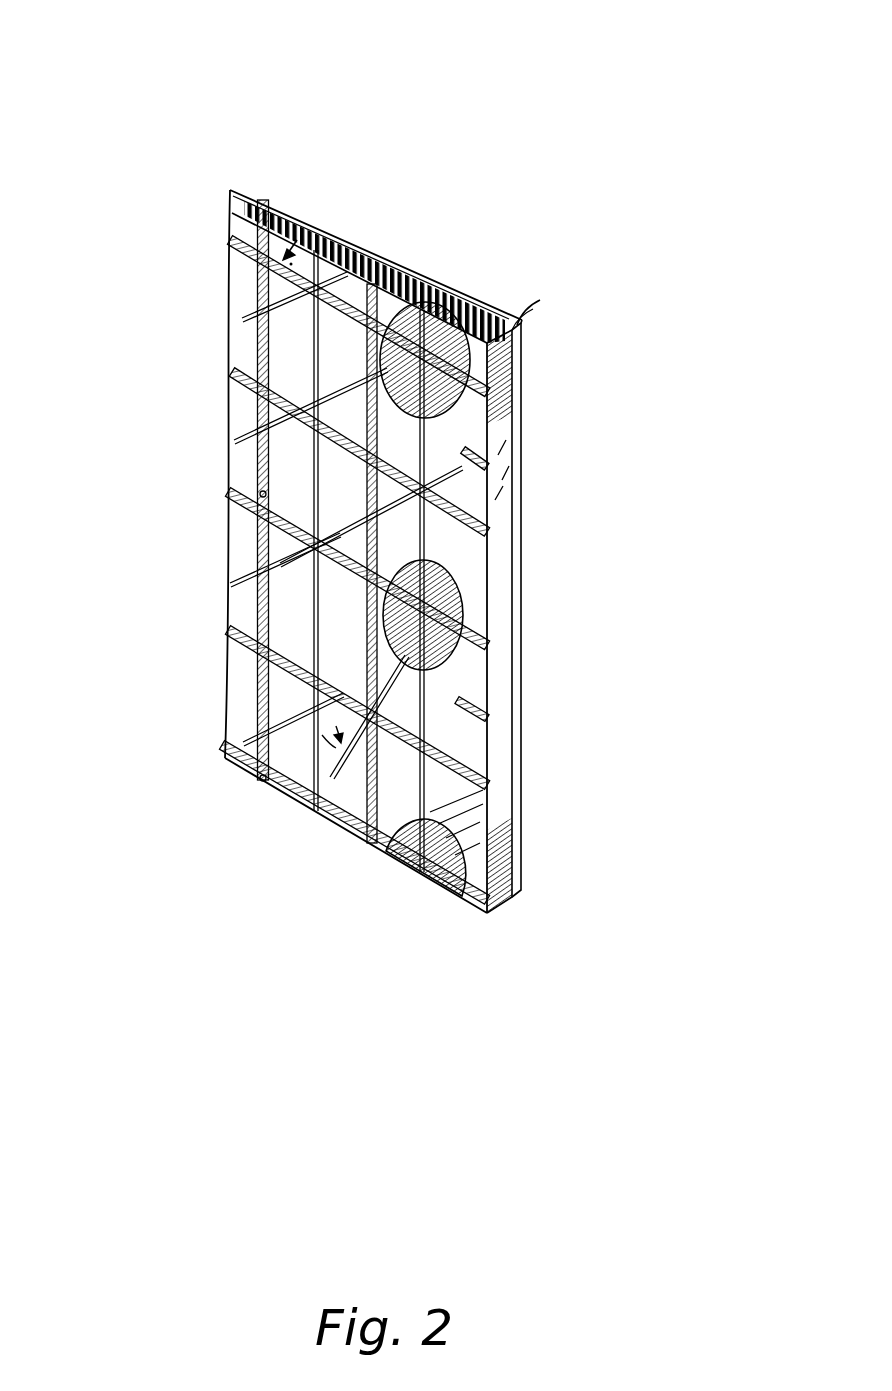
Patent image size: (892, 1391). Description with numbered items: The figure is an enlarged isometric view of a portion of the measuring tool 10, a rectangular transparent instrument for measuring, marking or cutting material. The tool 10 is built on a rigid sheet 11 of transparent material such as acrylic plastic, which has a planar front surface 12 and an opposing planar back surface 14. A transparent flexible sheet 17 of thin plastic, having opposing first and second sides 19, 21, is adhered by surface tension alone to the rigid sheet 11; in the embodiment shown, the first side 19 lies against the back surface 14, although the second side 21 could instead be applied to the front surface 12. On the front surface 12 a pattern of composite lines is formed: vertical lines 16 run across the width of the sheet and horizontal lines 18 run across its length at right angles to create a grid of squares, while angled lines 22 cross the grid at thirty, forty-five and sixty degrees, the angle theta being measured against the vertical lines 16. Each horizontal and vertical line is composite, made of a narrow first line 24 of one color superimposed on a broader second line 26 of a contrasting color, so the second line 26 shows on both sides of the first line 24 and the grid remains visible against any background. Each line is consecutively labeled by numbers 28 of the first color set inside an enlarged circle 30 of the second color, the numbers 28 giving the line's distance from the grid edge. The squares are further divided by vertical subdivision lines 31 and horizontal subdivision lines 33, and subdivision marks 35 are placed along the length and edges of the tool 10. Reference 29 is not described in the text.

The measuring tool 10 is at (208, 138).
The sheet of transparent material 11 is at (507, 437).
The front surface 12 is at (250, 284).
The back surface 14 is at (329, 208).
The vertical lines 16 is at (257, 597).
The flexible sheet 17 is at (427, 272).
The horizontal lines 18 is at (227, 742).
The first side 19 is at (523, 312).
The second side 21 is at (522, 377).
The angled lines 22 is at (330, 780).
The first line 24 is at (227, 492).
The second line 26 is at (237, 480).
The numbers 28 is at (427, 345).
The pad edge 29 is at (467, 617).
The enlarged circle 30 is at (493, 363).
The vertical subdivision lines 31 is at (430, 467).
The horizontal subdivision lines 33 is at (463, 520).
The subdivision marks 35 is at (473, 455).